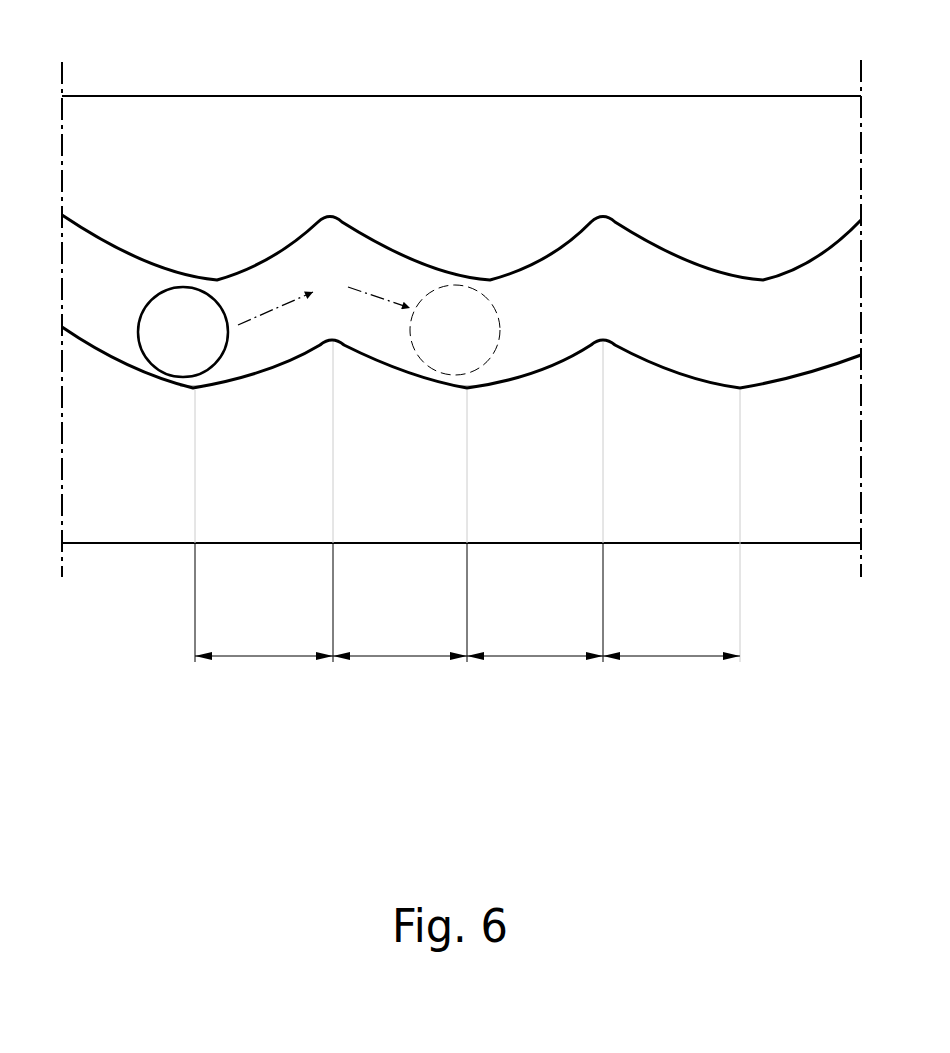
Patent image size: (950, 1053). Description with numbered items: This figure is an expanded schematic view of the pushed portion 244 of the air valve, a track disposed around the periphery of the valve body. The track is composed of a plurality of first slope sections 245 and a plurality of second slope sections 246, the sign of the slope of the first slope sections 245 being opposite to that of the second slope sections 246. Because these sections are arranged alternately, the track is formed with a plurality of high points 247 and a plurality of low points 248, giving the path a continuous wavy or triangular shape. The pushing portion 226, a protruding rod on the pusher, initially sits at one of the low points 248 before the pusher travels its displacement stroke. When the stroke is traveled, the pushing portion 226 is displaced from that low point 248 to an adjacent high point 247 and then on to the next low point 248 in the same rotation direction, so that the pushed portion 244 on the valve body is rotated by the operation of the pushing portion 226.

The pushing portion 226 is at (188, 303).
The pushed portion 244 is at (687, 313).
The first slope sections 245 is at (399, 644).
The second slope sections 246 is at (536, 644).
The high points 247 is at (331, 340).
The low points 248 is at (468, 388).